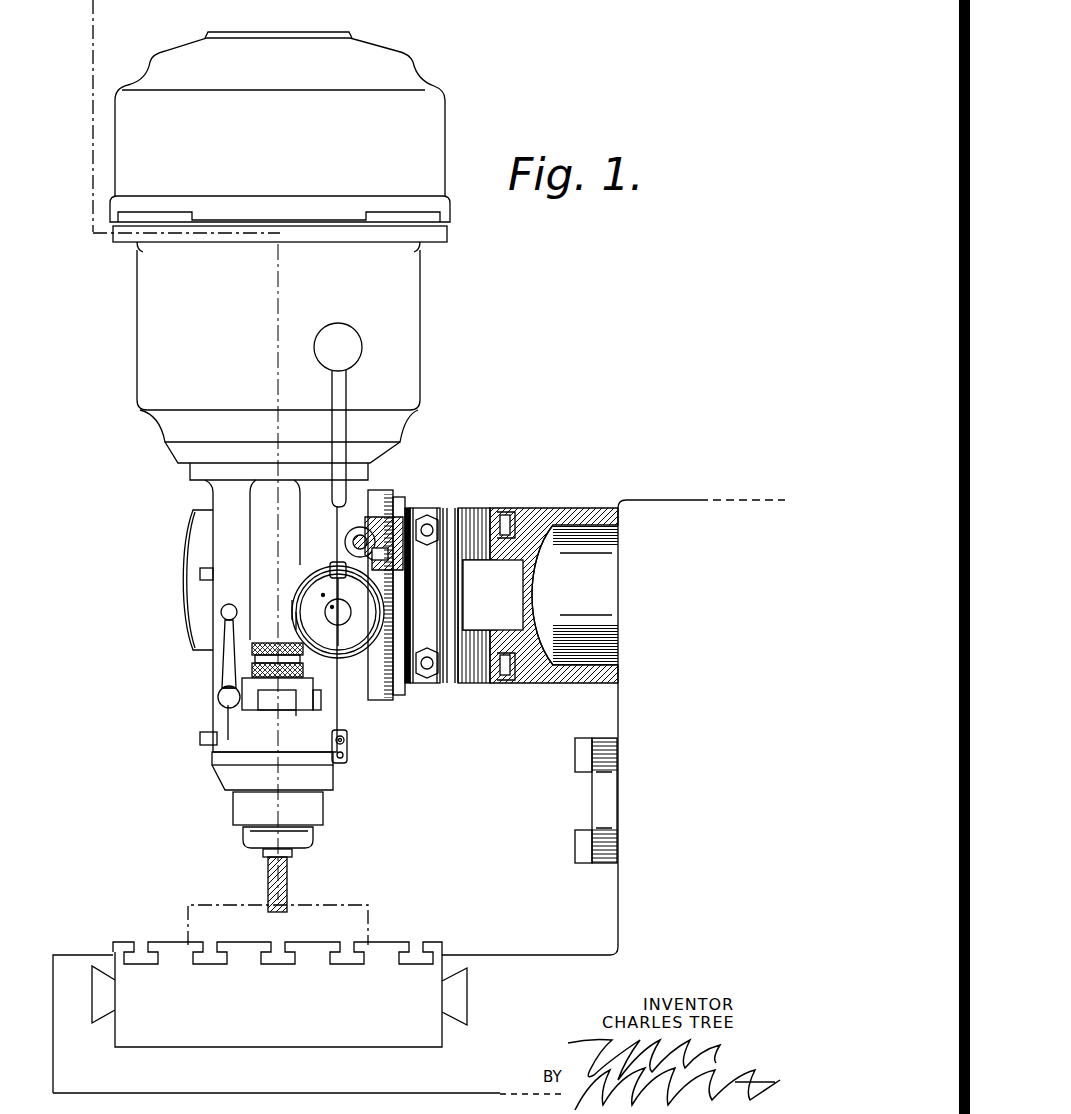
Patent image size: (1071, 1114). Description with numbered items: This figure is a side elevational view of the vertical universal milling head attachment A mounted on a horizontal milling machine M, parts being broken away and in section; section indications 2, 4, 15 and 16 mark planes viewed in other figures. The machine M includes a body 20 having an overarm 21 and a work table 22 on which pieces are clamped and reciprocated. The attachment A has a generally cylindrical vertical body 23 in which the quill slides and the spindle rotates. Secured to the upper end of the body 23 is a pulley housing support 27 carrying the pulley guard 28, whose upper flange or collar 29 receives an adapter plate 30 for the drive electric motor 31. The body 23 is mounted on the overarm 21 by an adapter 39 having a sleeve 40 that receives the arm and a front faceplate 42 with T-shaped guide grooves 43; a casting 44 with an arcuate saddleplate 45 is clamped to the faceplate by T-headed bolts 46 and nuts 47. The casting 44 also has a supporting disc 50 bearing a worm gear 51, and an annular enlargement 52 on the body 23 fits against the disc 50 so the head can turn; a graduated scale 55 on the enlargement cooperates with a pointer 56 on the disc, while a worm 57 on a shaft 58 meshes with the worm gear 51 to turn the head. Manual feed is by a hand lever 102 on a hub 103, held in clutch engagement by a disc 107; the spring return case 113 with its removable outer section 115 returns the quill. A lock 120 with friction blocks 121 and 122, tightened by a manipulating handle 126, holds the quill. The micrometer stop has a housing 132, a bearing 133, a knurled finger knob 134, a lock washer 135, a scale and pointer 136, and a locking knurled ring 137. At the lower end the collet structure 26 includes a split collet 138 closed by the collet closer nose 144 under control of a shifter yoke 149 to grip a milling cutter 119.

The section line 2- 2 is at (70, 15).
The drive electric motor 31 is at (433, 179).
The adapter plate 30 is at (420, 233).
The flange or collar 29 is at (425, 240).
The pulley guard 28 is at (403, 318).
The vertical universal milling head attachment A is at (150, 356).
The pulley housing support or casting 27 is at (178, 455).
The hand lever 102 is at (330, 398).
The section line 4- 4 is at (337, 487).
The housing 132 is at (262, 530).
The clamp lever 16 is at (220, 627).
The manipulating handle 126 is at (228, 650).
The section line 15- 15 is at (200, 692).
The scale and pointer 136 is at (292, 643).
The knurled finger knob 134 is at (276, 708).
The lock 120 is at (318, 710).
The friction block 122 is at (295, 724).
The friction block 121 is at (246, 722).
The bearing 133 is at (273, 716).
The threaded knurled ring 137 is at (338, 612).
The lock washer 135 is at (313, 653).
The hub 103 is at (322, 594).
The disc 107 is at (331, 606).
The spring return case 113 is at (290, 608).
The removable outer section 115 is at (298, 622).
The worm gear 51 is at (348, 562).
The worm 57 is at (350, 527).
The shaft 58 is at (353, 540).
The graduated scale 55 is at (384, 495).
The supporting disc 50 is at (401, 500).
The casting 44 is at (418, 503).
The T-headed bolts 46 is at (418, 512).
The nuts 47 is at (450, 510).
The arcuate saddleplate 45 is at (450, 674).
The pointer or line 56 is at (417, 567).
The adapter 39 is at (543, 506).
The sleeve 40 is at (582, 507).
The overarm 21 is at (587, 553).
The front faceplate 42 is at (502, 508).
The T-shaped guide grooves 43 is at (493, 525).
The body 20 is at (630, 706).
The horizontal milling machine M is at (562, 966).
The vertical body 23 is at (214, 742).
The annular enlargement 52 is at (342, 742).
The shifter yoke 149 is at (226, 777).
The collet closer nose 144 is at (303, 833).
The collet structure 26 is at (252, 836).
The split collet 138 is at (290, 853).
The milling cutter 119 is at (286, 880).
The table 22 is at (378, 962).